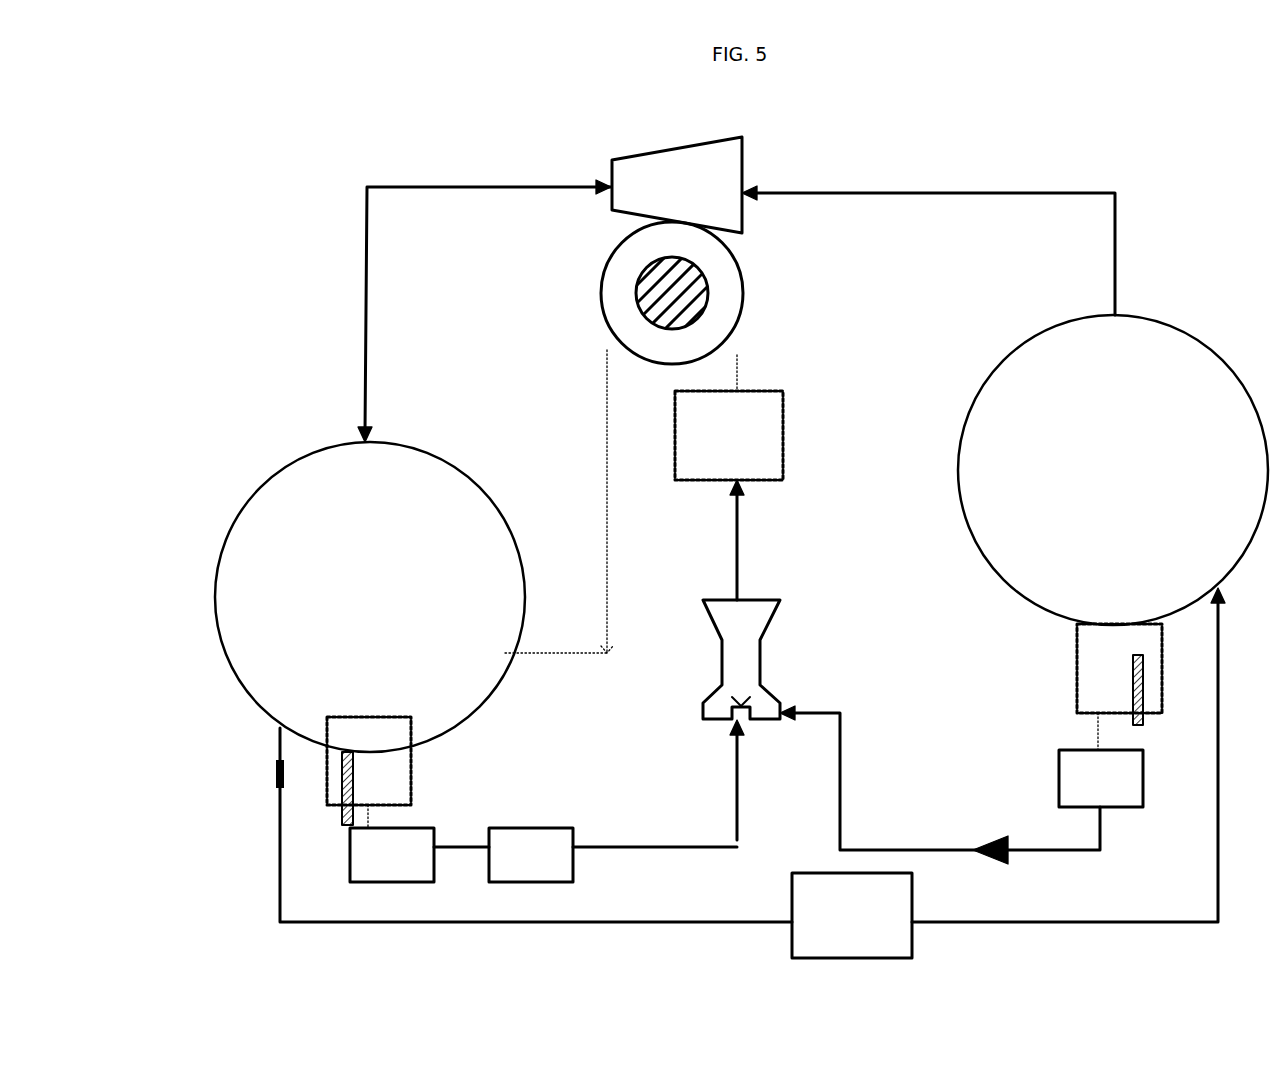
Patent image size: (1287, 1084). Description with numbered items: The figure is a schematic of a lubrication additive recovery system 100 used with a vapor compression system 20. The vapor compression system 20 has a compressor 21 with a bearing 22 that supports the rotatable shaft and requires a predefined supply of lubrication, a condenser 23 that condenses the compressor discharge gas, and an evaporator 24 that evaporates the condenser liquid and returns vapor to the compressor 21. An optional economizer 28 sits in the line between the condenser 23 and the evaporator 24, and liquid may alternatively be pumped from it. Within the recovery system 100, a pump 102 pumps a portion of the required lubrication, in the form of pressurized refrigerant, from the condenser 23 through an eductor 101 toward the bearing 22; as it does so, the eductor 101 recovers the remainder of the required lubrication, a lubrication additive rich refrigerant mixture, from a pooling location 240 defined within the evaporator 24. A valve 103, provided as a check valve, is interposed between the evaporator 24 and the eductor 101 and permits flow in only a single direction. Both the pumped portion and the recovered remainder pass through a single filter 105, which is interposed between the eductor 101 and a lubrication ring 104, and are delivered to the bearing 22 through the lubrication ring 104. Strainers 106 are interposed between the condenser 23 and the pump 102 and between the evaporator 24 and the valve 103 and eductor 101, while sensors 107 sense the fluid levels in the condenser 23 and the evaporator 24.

The lubrication additive recovery system 100 is at (236, 216).
The vapor compression system 20 is at (611, 185).
The compressor 21 is at (742, 164).
The bearing 22 is at (704, 271).
The condenser 23 is at (266, 479).
The evaporator 24 is at (1026, 345).
The optional economizer 28 is at (792, 898).
The eductor 101 is at (772, 650).
The pump 102 is at (531, 855).
The valve 103 is at (985, 847).
The lubrication ring 104 is at (745, 316).
The single filter 105 is at (729, 435).
The strainers 106 is at (746, 816).
The sensors 107 is at (413, 778).
The pooling location 240 is at (1063, 611).